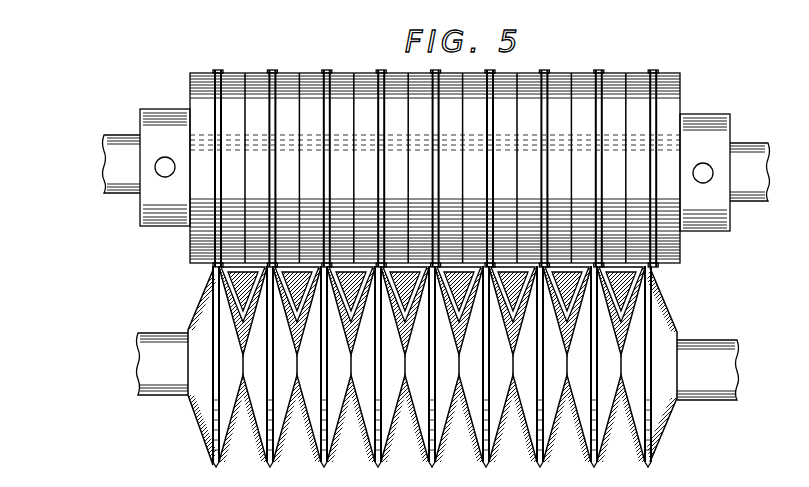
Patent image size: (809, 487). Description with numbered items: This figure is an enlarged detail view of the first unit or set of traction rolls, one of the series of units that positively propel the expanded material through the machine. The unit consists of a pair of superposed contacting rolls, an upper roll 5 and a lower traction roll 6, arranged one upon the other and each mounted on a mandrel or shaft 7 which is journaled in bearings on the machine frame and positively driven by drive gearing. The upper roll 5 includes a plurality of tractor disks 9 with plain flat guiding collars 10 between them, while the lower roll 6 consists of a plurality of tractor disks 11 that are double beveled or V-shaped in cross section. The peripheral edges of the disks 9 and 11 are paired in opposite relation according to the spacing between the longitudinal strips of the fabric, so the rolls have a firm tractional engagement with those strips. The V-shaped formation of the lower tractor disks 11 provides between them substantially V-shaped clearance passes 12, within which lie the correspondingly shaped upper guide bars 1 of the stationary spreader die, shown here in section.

The upper roll 5 is at (430, 151).
The lower traction roll 6 is at (437, 367).
The mandrel or shaft 7 is at (105, 164).
The tractor disk 9 is at (216, 71).
The guiding collar 10 is at (256, 72).
The upper guide bar 1 is at (240, 284).
The clearance pass 12 is at (630, 304).
The tractor disk 11 is at (201, 426).